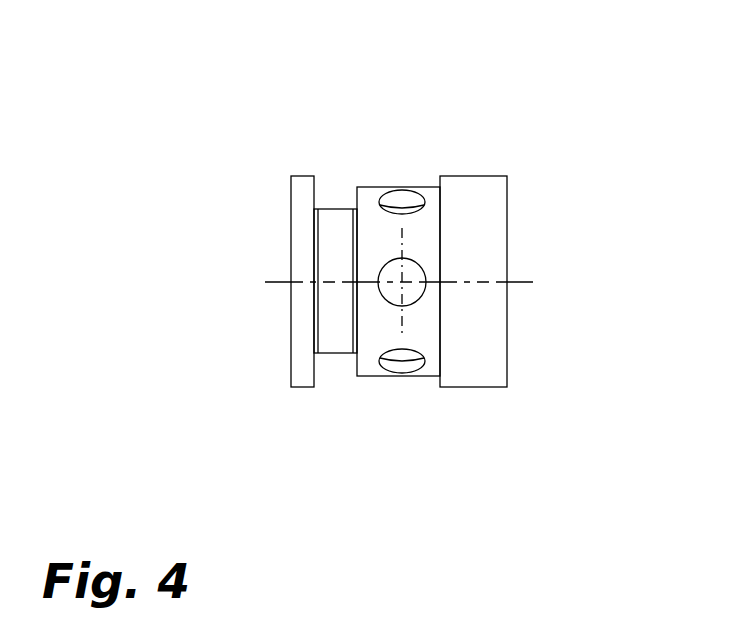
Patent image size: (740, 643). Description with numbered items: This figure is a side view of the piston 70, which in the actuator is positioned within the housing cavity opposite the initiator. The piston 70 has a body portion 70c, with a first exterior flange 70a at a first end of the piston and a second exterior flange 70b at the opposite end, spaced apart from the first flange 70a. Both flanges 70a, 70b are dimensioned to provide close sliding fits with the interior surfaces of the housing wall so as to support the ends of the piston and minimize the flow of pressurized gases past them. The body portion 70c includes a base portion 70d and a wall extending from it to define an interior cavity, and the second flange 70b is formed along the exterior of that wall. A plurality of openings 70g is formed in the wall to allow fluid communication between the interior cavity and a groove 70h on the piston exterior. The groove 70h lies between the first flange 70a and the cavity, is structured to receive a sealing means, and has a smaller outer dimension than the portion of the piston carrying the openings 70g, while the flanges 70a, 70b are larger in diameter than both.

The piston 70 is at (167, 286).
The first exterior flange 70a is at (305, 190).
The second exterior flange 70b is at (477, 362).
The body portion 70c is at (369, 195).
The base portion 70d is at (399, 642).
The openings 70g is at (399, 366).
The groove 70h is at (331, 353).